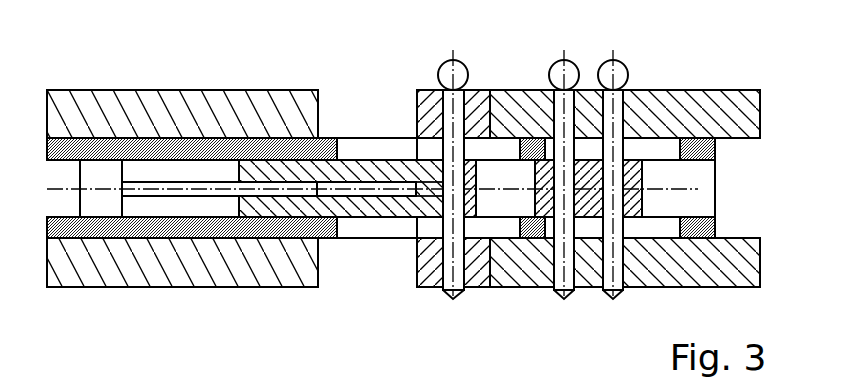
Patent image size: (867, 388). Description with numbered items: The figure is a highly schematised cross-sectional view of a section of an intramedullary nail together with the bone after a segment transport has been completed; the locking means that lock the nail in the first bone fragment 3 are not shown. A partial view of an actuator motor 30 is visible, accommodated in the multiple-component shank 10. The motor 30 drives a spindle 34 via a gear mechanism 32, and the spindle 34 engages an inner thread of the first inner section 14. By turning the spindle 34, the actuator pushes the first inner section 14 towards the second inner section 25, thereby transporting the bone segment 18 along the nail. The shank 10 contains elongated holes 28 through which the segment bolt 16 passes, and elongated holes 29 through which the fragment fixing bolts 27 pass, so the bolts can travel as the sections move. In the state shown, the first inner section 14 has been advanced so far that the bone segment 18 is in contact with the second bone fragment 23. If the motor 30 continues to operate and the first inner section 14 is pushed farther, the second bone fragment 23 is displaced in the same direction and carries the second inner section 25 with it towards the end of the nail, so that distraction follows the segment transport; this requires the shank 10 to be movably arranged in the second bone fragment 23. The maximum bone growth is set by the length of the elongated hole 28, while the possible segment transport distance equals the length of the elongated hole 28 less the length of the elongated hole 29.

The first bone fragment 3 is at (212, 90).
The multiple-component shank 10 is at (318, 138).
The first inner section 14 is at (292, 207).
The segment bolt 16 is at (458, 64).
The bone segment 18 is at (483, 90).
The second bone fragment 23 is at (665, 90).
The second inner section 25 is at (536, 238).
The fragment fixing bolts 27 is at (565, 63).
The elongated holes 28 is at (368, 147).
The elongated holes 29 is at (672, 146).
The actuator motor 30 is at (65, 206).
The gear mechanism 32 is at (100, 206).
The spindle 34 is at (176, 192).